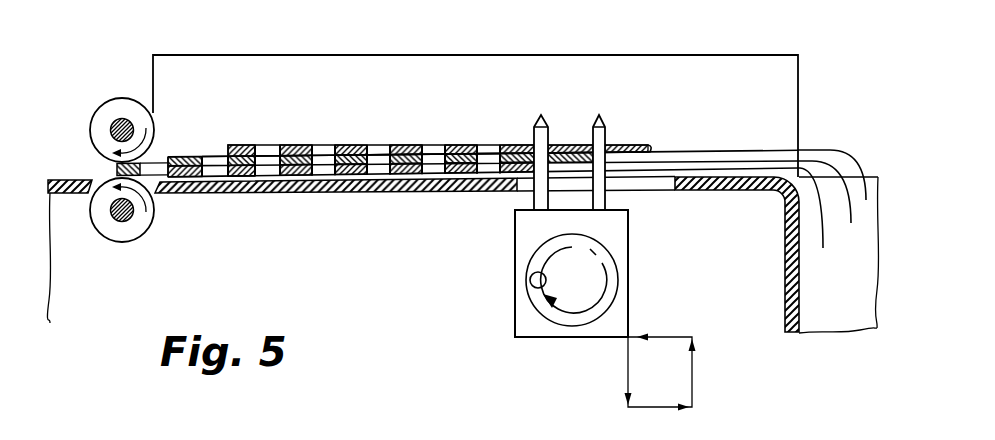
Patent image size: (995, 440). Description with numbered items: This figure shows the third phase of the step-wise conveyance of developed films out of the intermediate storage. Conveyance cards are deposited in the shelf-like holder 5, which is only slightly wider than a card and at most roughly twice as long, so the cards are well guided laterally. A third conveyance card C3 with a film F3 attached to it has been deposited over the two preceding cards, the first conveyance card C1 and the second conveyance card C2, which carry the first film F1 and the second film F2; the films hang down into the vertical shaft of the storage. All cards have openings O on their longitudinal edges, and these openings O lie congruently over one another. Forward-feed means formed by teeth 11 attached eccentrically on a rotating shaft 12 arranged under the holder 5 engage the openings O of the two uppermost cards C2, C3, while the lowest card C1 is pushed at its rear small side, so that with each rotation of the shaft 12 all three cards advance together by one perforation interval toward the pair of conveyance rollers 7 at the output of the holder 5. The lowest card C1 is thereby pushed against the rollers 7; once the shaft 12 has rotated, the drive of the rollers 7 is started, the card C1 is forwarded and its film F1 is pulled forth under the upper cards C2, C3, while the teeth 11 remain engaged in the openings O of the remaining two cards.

The shelf-like holder 5 is at (825, 92).
The pair of conveyance rollers 7 is at (100, 122).
The first conveyance card C1 is at (140, 167).
The second conveyance card C2 is at (188, 158).
The third conveyance card C3 is at (294, 150).
The openings O is at (430, 150).
The teeth 11 is at (588, 132).
The rotating shaft 12 is at (553, 260).
The first film F1 is at (668, 167).
The second film F2 is at (710, 160).
The third film F3 is at (755, 150).